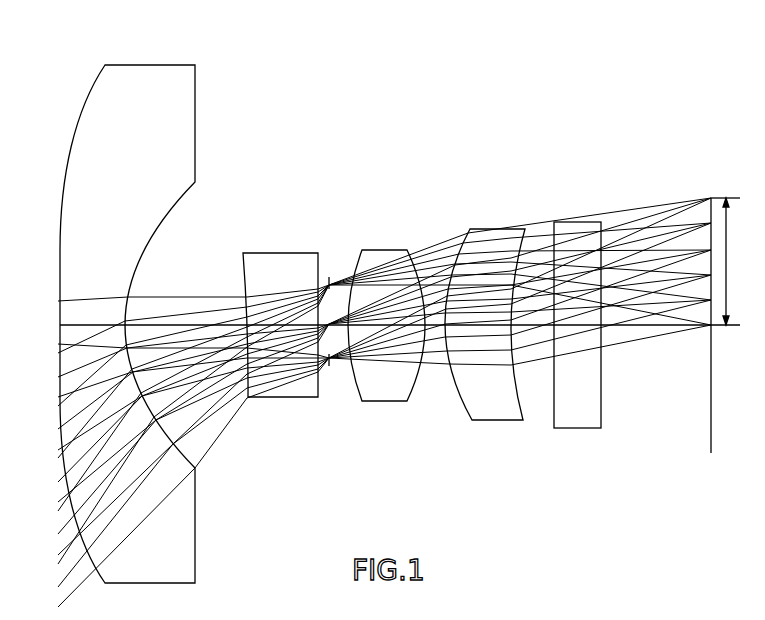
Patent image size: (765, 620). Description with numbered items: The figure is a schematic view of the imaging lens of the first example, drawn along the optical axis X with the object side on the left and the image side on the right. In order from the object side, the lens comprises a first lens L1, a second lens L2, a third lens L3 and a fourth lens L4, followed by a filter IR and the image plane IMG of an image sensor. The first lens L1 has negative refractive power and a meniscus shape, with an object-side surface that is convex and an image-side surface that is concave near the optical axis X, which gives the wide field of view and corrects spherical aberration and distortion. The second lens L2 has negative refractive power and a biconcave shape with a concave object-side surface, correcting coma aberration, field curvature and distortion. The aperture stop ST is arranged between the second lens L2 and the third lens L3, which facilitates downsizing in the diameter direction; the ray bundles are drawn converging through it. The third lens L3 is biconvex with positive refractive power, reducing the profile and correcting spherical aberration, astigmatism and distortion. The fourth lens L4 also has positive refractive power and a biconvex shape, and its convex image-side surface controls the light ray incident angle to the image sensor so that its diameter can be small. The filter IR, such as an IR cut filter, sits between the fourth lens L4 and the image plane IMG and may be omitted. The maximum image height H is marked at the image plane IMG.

The first lens L1 is at (163, 65).
The second lens L2 is at (297, 253).
The third lens L3 is at (385, 250).
The fourth lens L4 is at (501, 229).
The aperture stop ST is at (330, 367).
The filter IR is at (575, 222).
The image plane IMG is at (710, 447).
The optical axis X is at (62, 292).
The maximum image height H is at (735, 261).